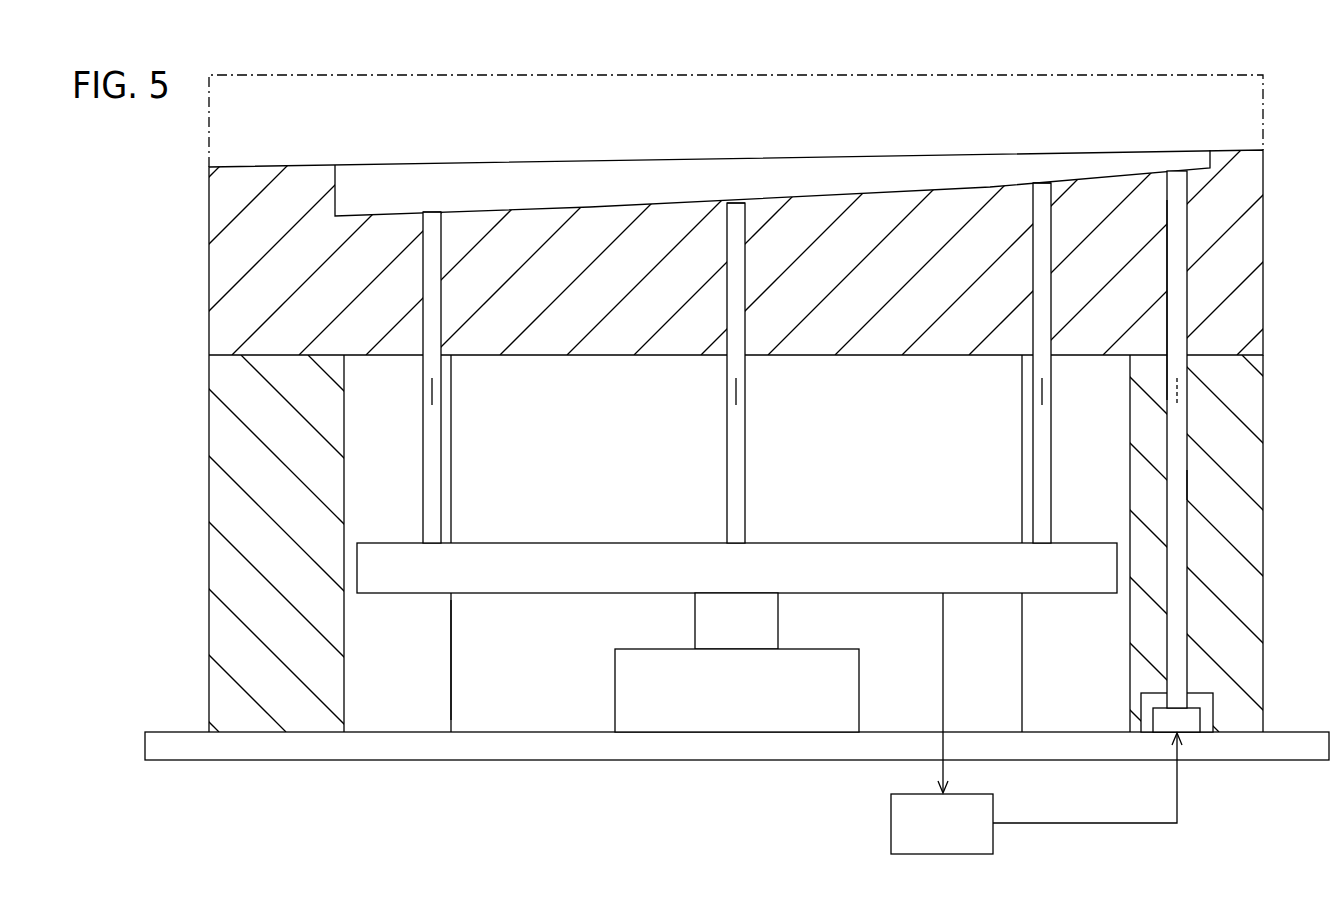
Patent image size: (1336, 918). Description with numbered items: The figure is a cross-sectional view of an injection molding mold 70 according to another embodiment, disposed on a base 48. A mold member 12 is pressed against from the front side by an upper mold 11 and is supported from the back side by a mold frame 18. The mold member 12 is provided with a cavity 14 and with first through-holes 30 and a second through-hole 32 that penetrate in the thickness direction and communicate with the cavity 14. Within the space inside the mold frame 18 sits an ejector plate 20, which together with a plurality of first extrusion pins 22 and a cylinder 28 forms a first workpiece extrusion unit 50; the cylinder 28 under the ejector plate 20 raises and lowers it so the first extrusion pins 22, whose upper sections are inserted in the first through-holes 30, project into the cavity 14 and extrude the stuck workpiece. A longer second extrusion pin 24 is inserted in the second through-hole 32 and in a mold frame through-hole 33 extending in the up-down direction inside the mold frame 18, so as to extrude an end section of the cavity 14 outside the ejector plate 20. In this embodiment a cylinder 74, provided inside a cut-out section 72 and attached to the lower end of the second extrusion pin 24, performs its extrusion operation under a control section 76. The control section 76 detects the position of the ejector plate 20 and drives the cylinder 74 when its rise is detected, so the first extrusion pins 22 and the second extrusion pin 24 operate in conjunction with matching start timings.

The upper mold 11 is at (1250, 105).
The mold member 12 is at (1218, 205).
The cavity 14 is at (760, 185).
The mold frame 18 is at (1218, 408).
The ejector plate 20 is at (870, 562).
The first extrusion pin 22 is at (435, 438).
The second extrusion pin 24 is at (1176, 290).
The cylinder 28 is at (747, 700).
The first through-hole 30 is at (440, 220).
The second through-hole 32 is at (1182, 183).
The mold frame through-hole 33 is at (1172, 490).
The base 48 is at (623, 748).
The first workpiece extrusion unit 50 is at (549, 700).
The injection molding mold 70 is at (108, 152).
The cut-out section 72 is at (1200, 700).
The cylinder 74 is at (1163, 717).
The control section 76 is at (891, 822).